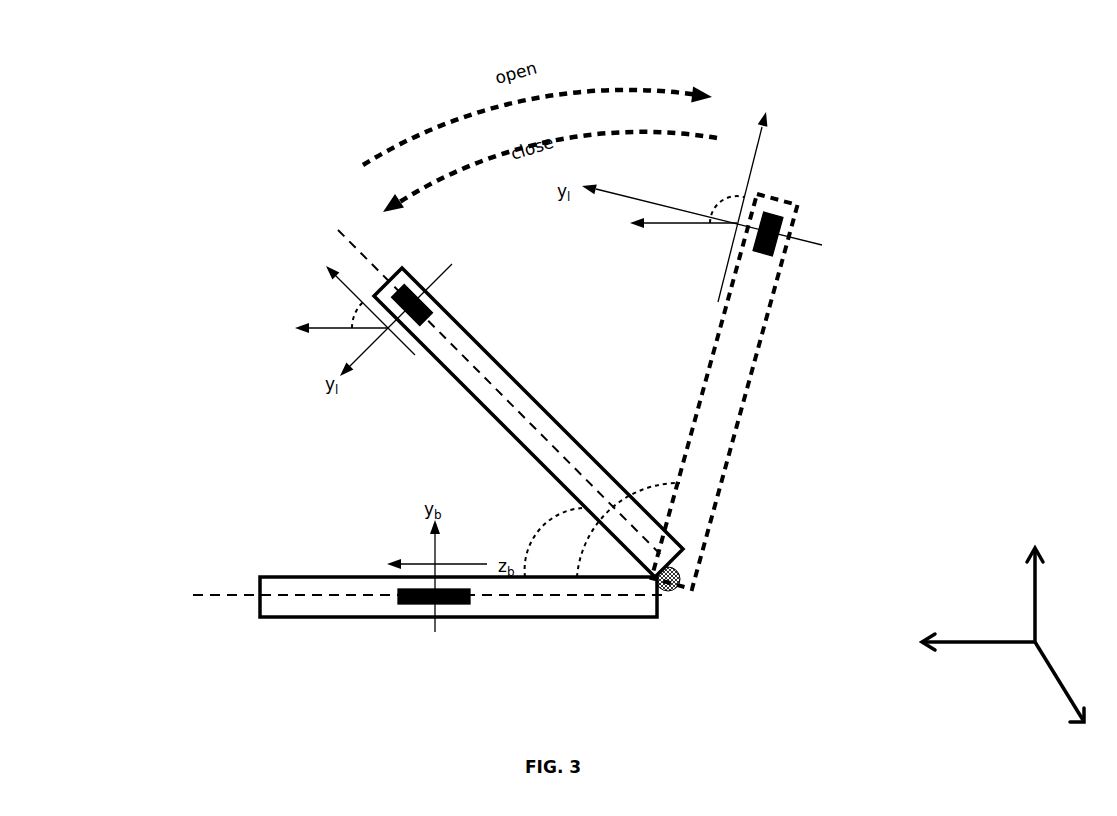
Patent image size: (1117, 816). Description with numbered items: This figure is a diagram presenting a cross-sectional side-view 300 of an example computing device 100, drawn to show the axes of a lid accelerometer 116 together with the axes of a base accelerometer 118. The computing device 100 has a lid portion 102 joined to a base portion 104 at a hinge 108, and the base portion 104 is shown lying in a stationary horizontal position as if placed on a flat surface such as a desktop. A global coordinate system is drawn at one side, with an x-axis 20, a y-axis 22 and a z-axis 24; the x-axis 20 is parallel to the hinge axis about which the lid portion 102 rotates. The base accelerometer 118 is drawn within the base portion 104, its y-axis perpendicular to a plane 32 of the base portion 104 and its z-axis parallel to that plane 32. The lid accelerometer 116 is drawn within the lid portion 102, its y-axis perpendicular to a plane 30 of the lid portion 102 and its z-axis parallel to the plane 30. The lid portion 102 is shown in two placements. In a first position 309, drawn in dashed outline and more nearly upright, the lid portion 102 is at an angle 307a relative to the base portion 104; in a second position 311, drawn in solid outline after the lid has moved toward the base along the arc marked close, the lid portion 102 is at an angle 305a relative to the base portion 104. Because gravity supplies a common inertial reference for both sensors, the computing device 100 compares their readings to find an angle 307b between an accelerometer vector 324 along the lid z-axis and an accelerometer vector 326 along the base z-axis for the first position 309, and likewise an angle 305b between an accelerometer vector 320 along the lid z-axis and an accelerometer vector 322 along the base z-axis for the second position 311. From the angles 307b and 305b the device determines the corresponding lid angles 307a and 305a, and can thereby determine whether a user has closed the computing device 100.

The cross-sectional side-view 300 is at (286, 13).
The computing device 100 is at (79, 158).
The lid portion 102 is at (490, 358).
The base portion 104 is at (564, 618).
The hinge 108 is at (671, 590).
The lid accelerometer 116 is at (452, 266).
The base accelerometer 118 is at (453, 605).
The plane of the lid portion 30 is at (330, 228).
The plane of the base portion 32 is at (230, 595).
The second position 311 is at (316, 190).
The accelerometer vector 320 is at (370, 272).
The accelerometer vector 322 is at (327, 328).
The angle 305a is at (542, 527).
The angle 305b is at (356, 315).
The accelerometer vector 324 is at (758, 150).
The accelerometer vector 326 is at (676, 224).
The angle 307a is at (678, 482).
The angle 307b is at (721, 202).
The first position 309 is at (792, 180).
The x-axis 20 is at (993, 639).
The y-axis 22 is at (1034, 605).
The z-axis 24 is at (996, 644).